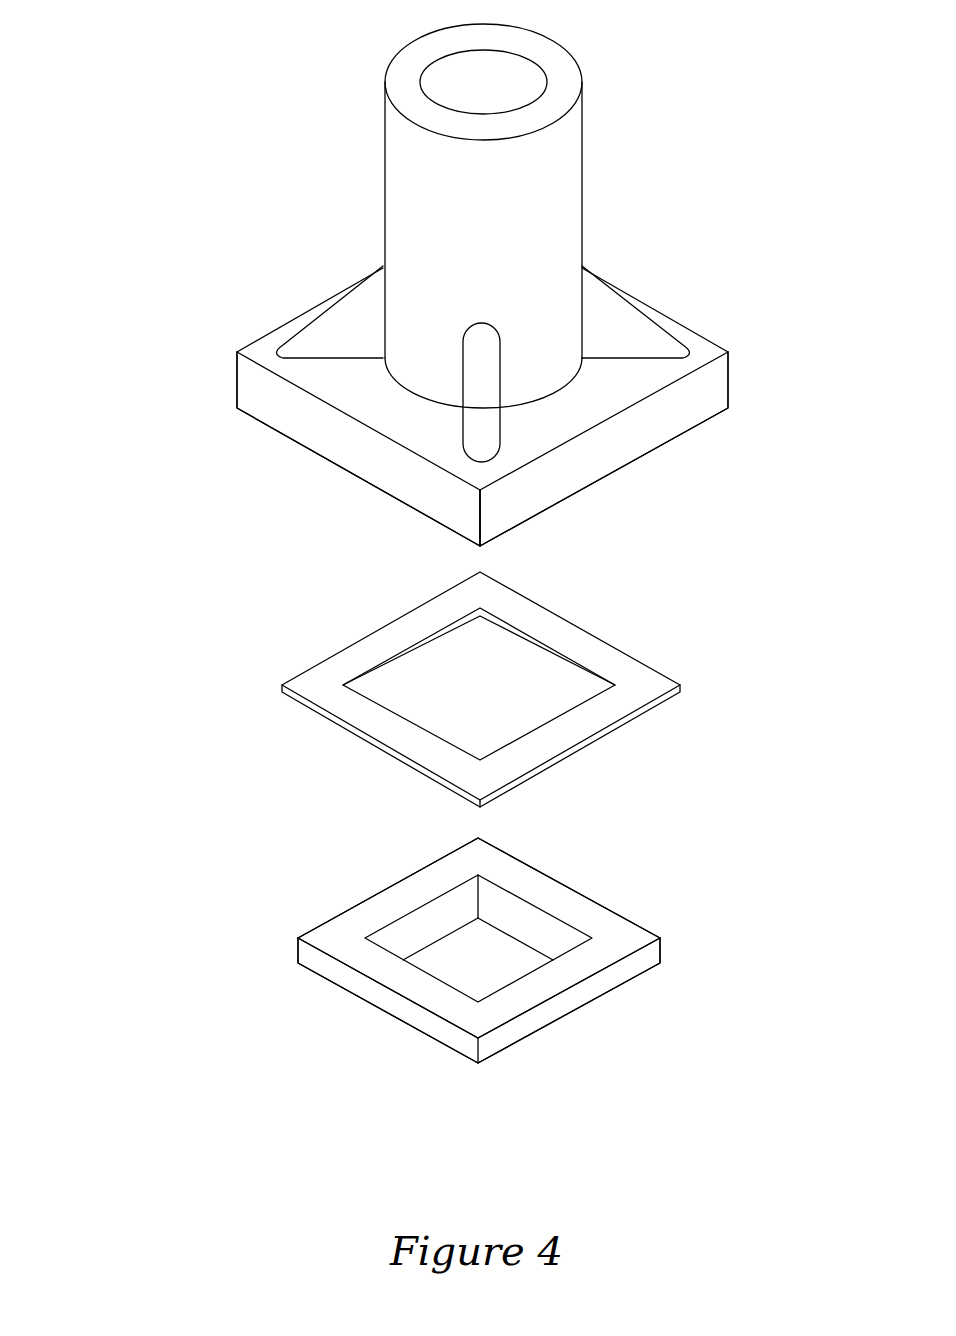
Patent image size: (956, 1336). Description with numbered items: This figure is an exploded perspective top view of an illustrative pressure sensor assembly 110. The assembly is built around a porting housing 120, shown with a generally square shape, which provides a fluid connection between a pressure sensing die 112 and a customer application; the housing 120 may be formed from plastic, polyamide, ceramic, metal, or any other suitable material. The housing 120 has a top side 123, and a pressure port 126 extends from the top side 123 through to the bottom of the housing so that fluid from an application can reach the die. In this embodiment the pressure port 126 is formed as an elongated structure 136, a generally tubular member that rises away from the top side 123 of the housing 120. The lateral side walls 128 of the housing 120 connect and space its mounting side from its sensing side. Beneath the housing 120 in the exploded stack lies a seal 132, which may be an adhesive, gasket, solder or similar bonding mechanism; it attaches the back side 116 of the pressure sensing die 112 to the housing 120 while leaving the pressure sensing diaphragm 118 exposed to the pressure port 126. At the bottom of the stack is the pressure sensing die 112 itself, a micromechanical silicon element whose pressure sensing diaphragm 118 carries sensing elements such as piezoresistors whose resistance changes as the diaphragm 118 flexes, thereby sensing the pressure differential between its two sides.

The pressure sensor assembly 110 is at (195, 55).
The pressure sensing die 112 is at (637, 910).
The back side 116 is at (545, 987).
The pressure sensing diaphragm 118 is at (453, 952).
The porting housing 120 is at (648, 123).
The top side 123 is at (268, 350).
The pressure port 126 is at (508, 70).
The lateral side walls 128 is at (350, 448).
The seal 132 is at (628, 678).
The elongated structure 136 is at (405, 212).